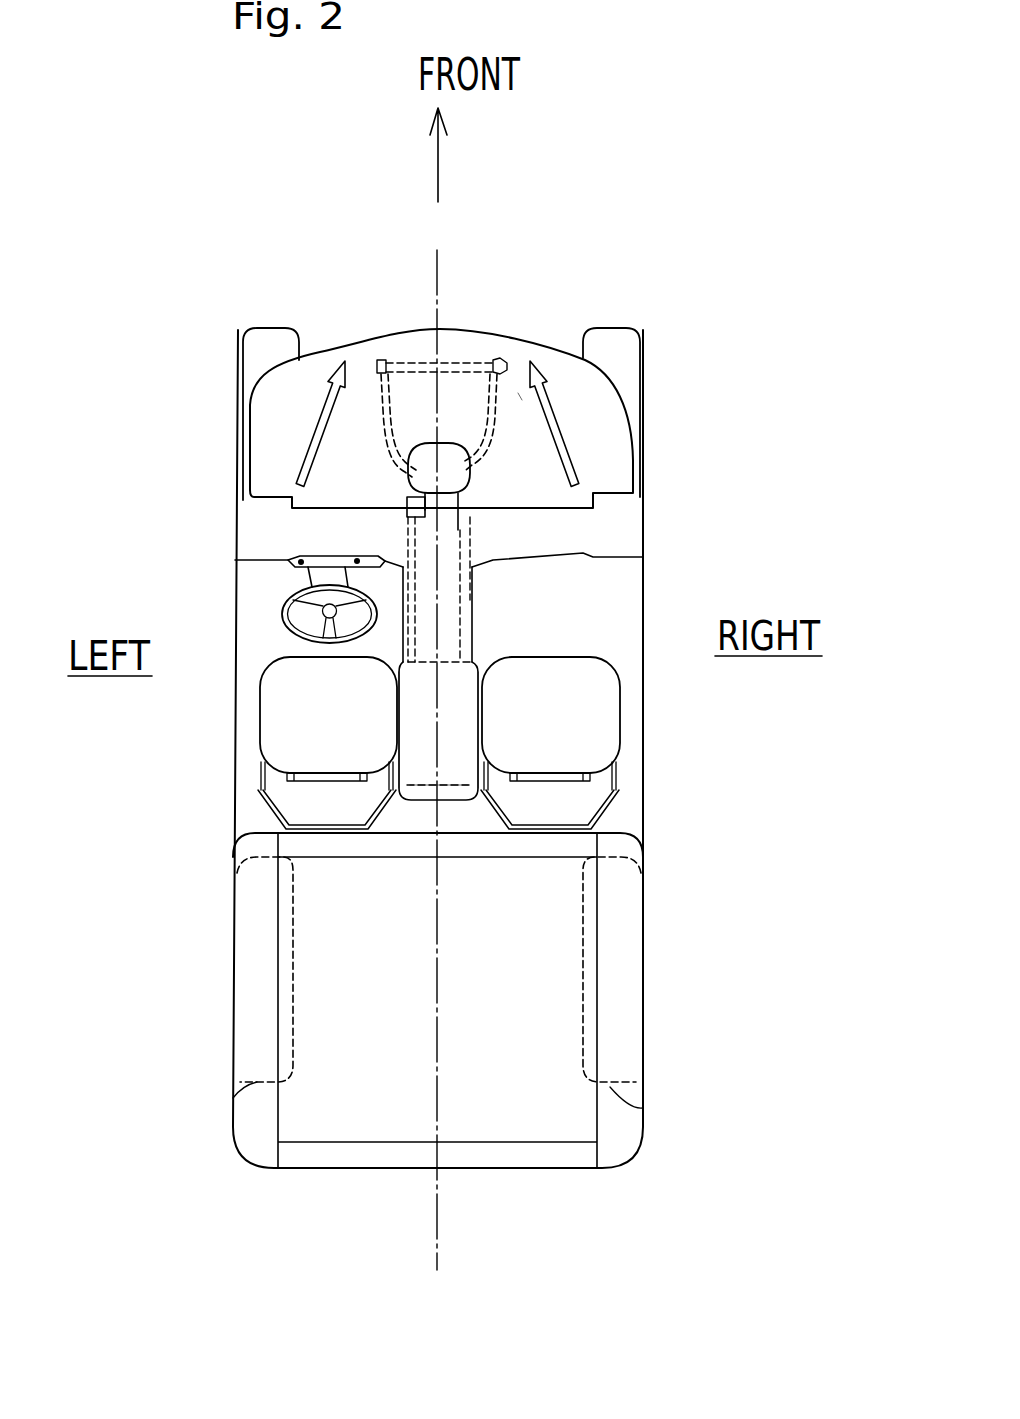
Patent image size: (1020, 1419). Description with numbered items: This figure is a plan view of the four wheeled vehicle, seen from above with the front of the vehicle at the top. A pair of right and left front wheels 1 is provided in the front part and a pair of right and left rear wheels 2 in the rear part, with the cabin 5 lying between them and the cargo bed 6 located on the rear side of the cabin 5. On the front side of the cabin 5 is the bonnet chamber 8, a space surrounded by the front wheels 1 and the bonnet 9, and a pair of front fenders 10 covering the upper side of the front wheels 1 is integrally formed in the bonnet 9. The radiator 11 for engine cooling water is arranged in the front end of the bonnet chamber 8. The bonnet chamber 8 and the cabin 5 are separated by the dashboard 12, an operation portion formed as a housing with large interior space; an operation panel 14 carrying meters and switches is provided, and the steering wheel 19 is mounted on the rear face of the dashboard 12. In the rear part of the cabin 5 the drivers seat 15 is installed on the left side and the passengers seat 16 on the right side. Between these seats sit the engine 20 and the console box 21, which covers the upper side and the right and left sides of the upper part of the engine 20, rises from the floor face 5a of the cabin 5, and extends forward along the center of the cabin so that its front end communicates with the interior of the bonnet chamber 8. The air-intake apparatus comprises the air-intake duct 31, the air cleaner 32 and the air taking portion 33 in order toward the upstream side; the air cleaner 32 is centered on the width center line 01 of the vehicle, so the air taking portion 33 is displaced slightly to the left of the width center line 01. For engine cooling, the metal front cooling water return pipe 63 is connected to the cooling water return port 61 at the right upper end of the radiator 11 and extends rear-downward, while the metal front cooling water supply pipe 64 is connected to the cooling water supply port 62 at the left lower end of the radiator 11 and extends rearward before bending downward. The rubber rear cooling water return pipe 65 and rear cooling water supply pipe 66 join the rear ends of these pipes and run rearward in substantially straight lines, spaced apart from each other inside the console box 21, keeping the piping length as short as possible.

The front wheels 1 is at (242, 360).
The rear wheels 2 is at (233, 1098).
The cabin 5 is at (233, 704).
The floor face 5a is at (595, 642).
The cargo bed 6 is at (360, 1127).
The bonnet chamber 8 is at (507, 497).
The bonnet 9 is at (518, 393).
The front fenders 10 is at (277, 407).
The radiator 11 is at (413, 360).
The dashboard 12 is at (538, 542).
The operation panel 14 is at (360, 558).
The drivers seat 15 is at (293, 738).
The passengers seat 16 is at (587, 733).
The steering wheel 19 is at (317, 600).
The engine 20 is at (423, 787).
The console box 21 is at (472, 607).
The air-intake duct 31 is at (462, 546).
The air cleaner 32 is at (480, 478).
The air taking portion 33 is at (410, 500).
The cooling water return port 61 is at (513, 343).
The cooling water supply port 62 is at (347, 353).
The front cooling water return pipe 63 is at (496, 394).
The front cooling water supply pipe 64 is at (378, 394).
The rear cooling water return pipe 65 is at (473, 646).
The rear cooling water supply pipe 66 is at (405, 643).
The width center line 01 is at (437, 957).